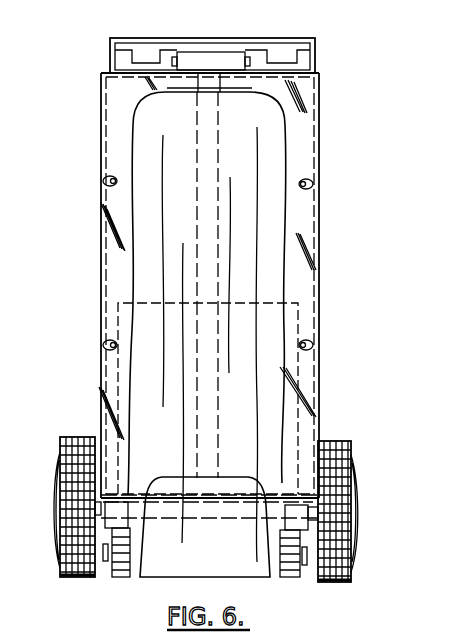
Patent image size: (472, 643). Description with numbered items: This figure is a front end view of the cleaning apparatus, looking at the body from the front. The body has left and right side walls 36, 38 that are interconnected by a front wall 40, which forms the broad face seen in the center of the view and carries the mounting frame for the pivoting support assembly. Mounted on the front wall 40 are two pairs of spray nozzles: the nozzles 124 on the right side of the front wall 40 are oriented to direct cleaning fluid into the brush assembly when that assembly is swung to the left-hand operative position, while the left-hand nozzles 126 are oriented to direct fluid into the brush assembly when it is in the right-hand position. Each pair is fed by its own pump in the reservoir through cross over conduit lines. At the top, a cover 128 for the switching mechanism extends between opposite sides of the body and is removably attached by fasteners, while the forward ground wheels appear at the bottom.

The cover 128 is at (131, 38).
The front wall 40 is at (120, 117).
The spray nozzles 124 is at (106, 178).
The spray nozzles 126 is at (302, 189).
The right side wall 38 is at (101, 254).
The left side wall 36 is at (316, 285).